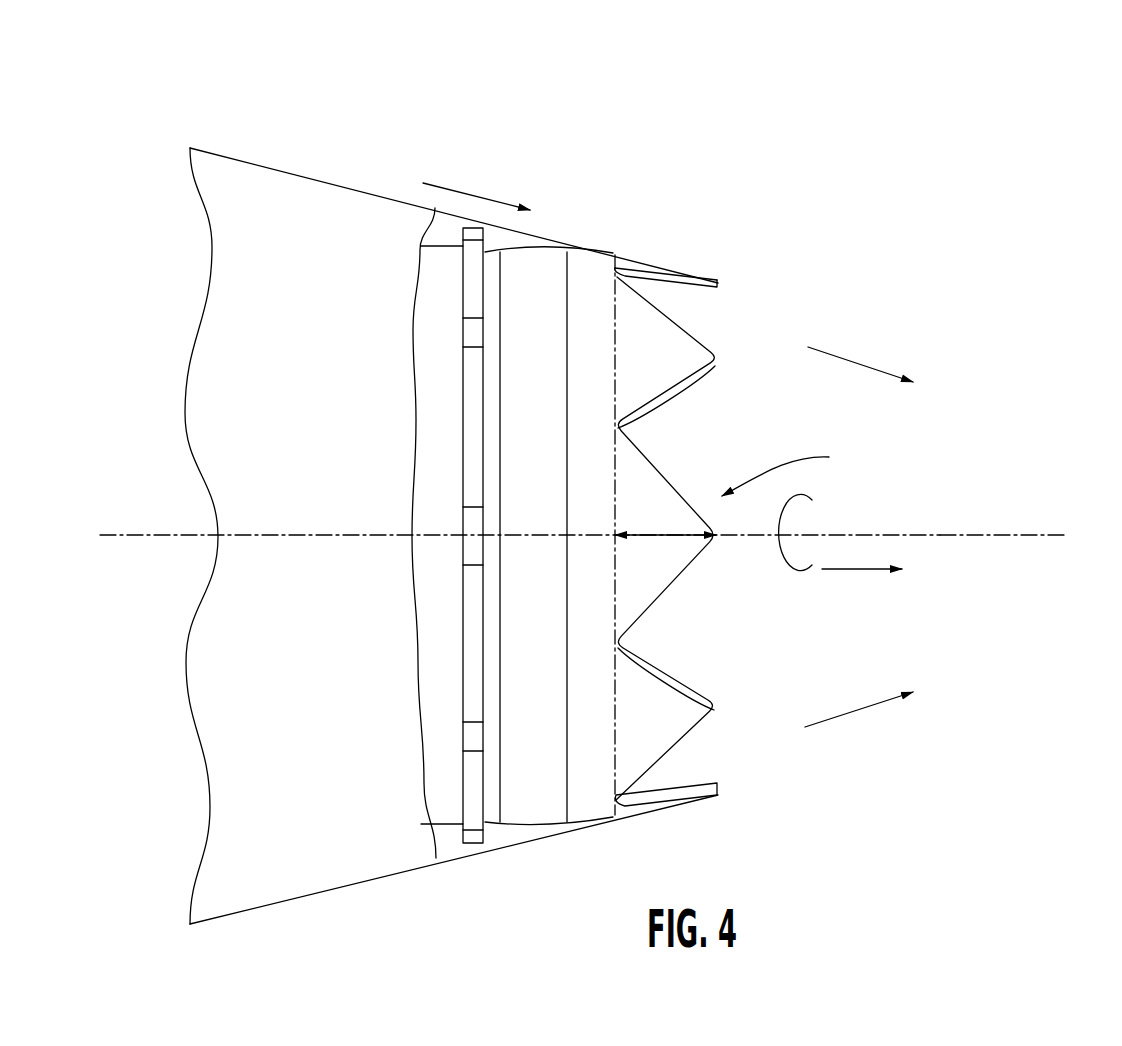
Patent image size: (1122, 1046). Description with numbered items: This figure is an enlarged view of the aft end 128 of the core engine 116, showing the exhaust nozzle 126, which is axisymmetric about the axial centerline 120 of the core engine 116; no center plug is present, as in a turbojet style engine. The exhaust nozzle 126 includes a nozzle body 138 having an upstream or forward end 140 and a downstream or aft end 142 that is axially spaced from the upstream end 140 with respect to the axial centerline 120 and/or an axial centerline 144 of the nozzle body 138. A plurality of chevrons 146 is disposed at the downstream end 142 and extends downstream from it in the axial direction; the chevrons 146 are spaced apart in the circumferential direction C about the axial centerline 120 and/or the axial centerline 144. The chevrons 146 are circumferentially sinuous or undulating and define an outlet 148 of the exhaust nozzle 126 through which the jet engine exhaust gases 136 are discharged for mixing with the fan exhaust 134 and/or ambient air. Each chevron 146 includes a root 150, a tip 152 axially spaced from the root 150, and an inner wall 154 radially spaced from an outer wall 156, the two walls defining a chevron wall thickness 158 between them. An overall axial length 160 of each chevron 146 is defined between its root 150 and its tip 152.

The core engine 116 is at (265, 130).
The axial centerline 120 is at (957, 533).
The exhaust nozzle 126 is at (555, 272).
The aft end 128 is at (311, 814).
The fan exhaust 134 is at (468, 195).
The jet engine exhaust gases 136 is at (862, 360).
The nozzle body 138 is at (560, 405).
The upstream end 140 is at (472, 852).
The downstream end 142 is at (602, 767).
The axial centerline of the nozzle body 144 is at (930, 537).
The chevrons 146 is at (685, 367).
The outlet 148 is at (793, 467).
The root 150 is at (693, 397).
The tip 152 is at (718, 710).
The inner wall 154 is at (692, 286).
The outer wall 156 is at (653, 262).
The chevron wall thickness 158 is at (693, 760).
The overall axial length 160 is at (660, 535).
The circumferential direction C is at (817, 513).